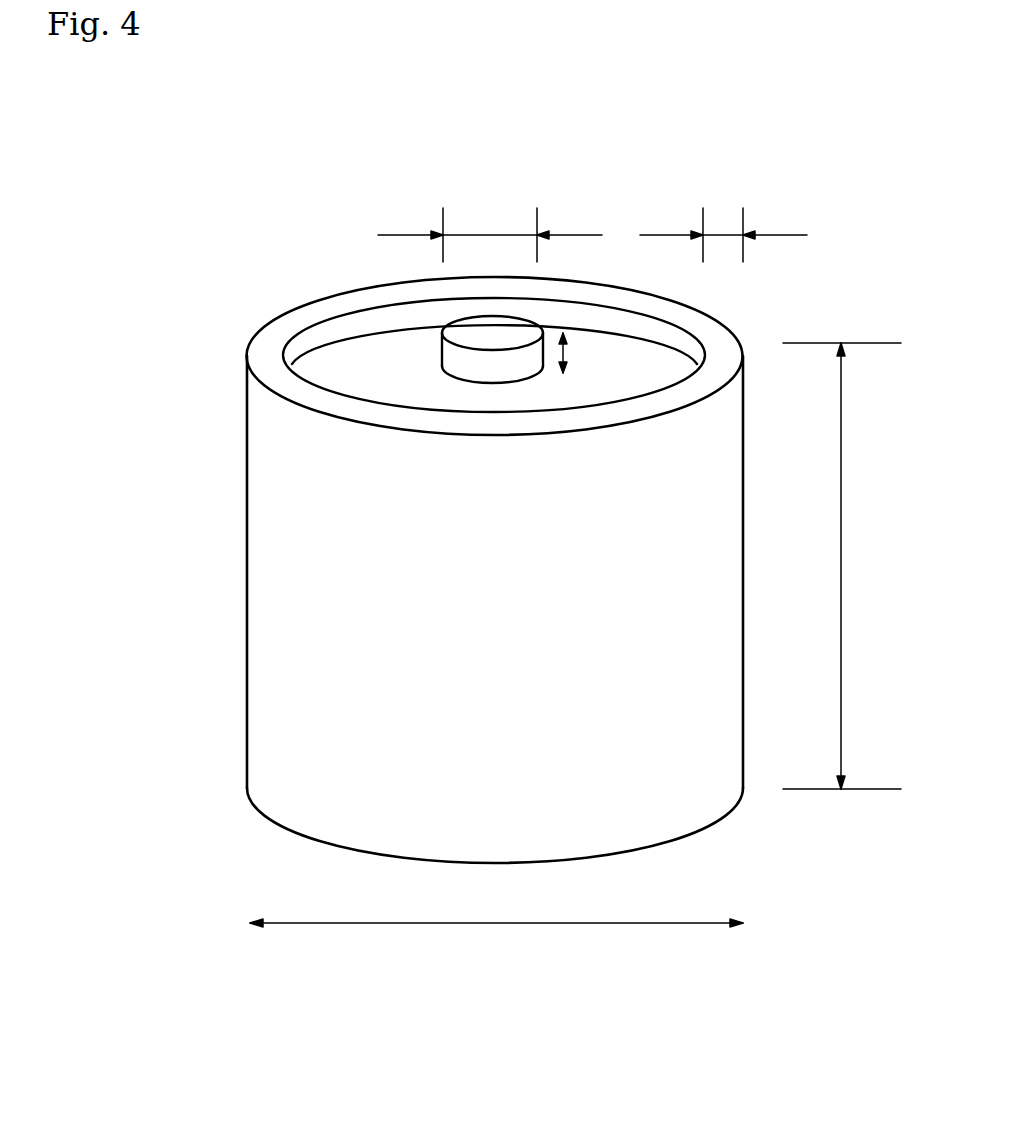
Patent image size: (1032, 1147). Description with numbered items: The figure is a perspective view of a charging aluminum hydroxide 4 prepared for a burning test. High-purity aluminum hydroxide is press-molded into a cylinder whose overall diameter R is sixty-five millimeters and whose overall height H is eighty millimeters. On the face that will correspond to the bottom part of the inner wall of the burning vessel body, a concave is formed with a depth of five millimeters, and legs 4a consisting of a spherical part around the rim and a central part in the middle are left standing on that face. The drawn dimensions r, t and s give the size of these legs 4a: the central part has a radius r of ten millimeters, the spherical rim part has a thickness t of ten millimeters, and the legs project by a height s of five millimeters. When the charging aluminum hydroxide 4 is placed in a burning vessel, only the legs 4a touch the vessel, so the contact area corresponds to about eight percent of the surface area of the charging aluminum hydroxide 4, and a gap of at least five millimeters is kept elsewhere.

The charging aluminum hydroxide 4 is at (273, 708).
The legs 4a is at (471, 328).
The radius of leg r is at (490, 217).
The thickness of spherical part t is at (723, 219).
The height of leg s is at (578, 353).
The height of cylinder H is at (842, 566).
The diameter of cylinder R is at (496, 954).